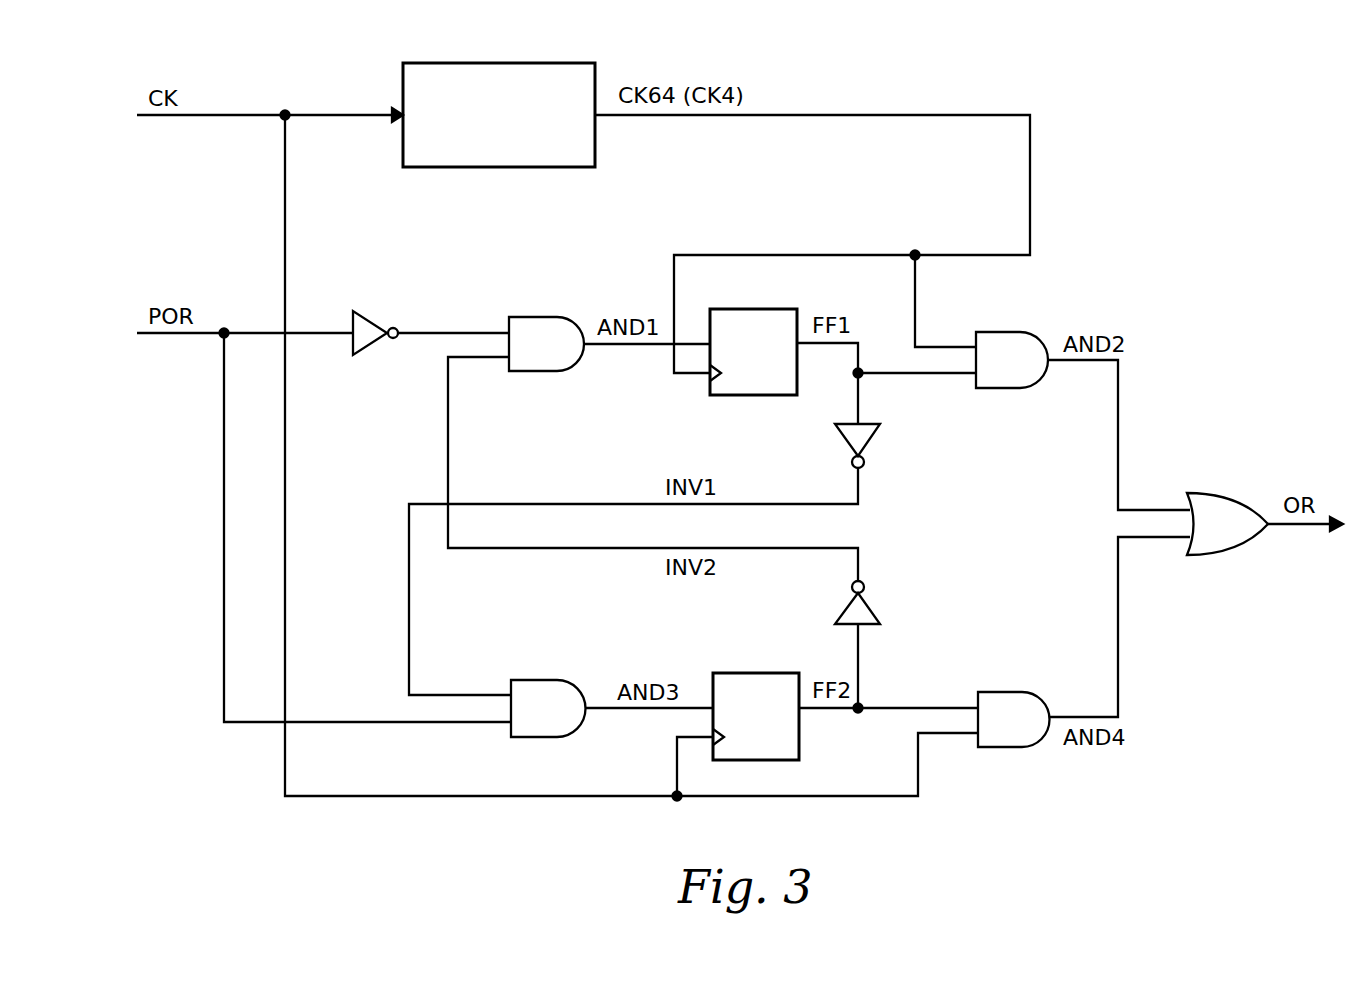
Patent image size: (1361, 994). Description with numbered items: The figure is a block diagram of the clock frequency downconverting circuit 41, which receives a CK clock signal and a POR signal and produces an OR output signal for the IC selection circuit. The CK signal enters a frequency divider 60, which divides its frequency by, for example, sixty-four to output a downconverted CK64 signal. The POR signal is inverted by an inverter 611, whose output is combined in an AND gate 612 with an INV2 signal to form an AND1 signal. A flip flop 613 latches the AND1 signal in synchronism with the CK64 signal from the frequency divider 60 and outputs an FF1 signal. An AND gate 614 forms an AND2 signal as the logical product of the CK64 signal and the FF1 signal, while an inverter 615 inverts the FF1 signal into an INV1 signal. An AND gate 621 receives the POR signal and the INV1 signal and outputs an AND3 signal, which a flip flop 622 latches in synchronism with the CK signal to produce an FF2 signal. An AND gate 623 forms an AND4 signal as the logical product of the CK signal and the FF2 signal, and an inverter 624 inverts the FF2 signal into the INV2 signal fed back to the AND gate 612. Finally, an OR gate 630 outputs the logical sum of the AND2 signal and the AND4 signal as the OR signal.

The clock frequency downconverting circuit 41 is at (1236, 226).
The frequency divider 60 is at (550, 63).
The inverter 611 is at (364, 315).
The AND gate 612 is at (530, 310).
The flip flop 613 is at (752, 302).
The AND gate 614 is at (997, 330).
The inverter 615 is at (870, 452).
The AND gate 621 is at (532, 678).
The flip flop 622 is at (754, 668).
The AND gate 623 is at (999, 690).
The inverter 624 is at (870, 603).
The OR gate 630 is at (1232, 493).